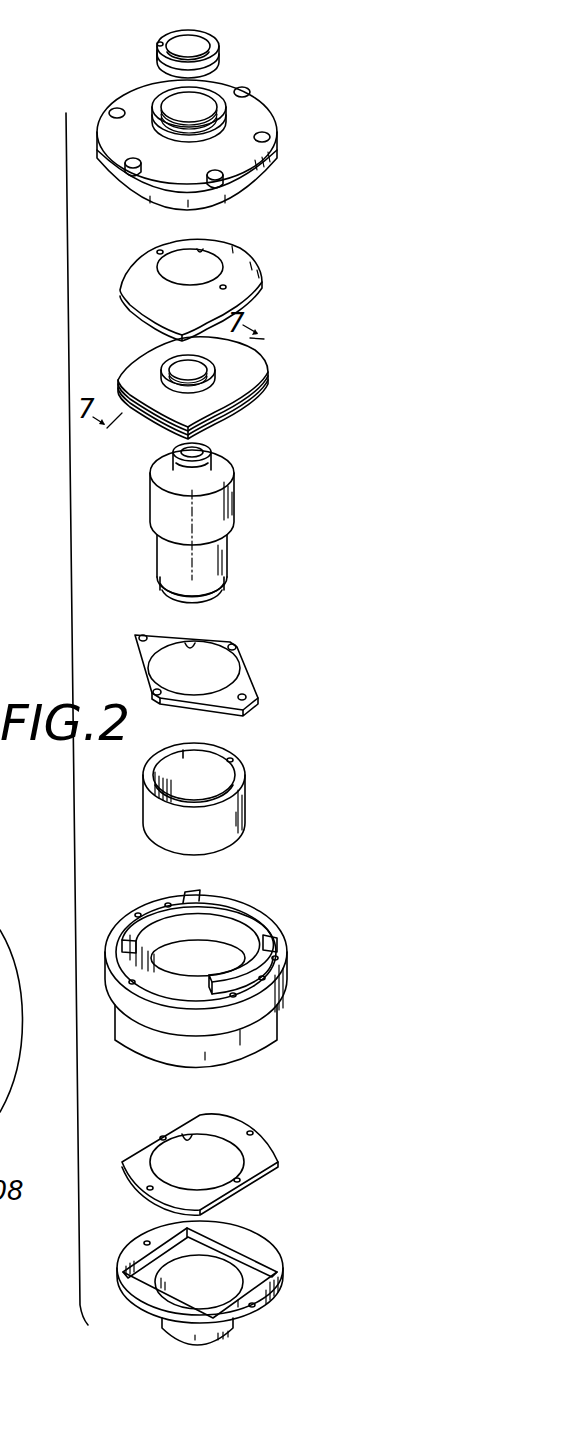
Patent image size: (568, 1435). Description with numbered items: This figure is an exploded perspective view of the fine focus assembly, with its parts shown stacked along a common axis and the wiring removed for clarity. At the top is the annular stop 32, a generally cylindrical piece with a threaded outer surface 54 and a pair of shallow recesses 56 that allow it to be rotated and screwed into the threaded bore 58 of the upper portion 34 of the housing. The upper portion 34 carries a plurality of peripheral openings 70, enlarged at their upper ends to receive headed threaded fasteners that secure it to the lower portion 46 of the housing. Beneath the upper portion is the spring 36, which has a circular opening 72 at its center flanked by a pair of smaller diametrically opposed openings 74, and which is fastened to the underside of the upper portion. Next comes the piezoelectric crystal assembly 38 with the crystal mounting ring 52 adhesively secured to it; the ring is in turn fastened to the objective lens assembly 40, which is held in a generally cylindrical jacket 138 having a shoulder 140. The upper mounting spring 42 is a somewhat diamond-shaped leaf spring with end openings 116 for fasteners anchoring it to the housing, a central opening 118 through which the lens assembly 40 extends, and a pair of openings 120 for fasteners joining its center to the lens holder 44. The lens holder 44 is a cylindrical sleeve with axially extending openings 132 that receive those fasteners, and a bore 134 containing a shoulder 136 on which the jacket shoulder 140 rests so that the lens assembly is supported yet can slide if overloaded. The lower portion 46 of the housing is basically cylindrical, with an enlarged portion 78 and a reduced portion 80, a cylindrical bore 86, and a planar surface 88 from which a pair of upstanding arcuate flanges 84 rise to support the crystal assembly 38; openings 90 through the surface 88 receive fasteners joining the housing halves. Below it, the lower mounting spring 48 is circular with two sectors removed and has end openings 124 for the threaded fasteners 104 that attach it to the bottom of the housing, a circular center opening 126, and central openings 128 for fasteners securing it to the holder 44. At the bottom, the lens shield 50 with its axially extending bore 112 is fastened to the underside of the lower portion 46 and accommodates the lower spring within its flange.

The annular stop 32 is at (215, 52).
The upper portion of the housing 34 is at (203, 142).
The spring 36 is at (218, 279).
The piezoelectric crystal assembly 38 is at (219, 386).
The objective lens assembly 40 is at (204, 523).
The upper mounting spring 42 is at (205, 653).
The lens holder 44 is at (193, 783).
The lower portion of the housing 46 is at (224, 975).
The lower mounting spring 48 is at (211, 1158).
The lens shield 50 is at (228, 1269).
The crystal mounting ring 52 is at (216, 370).
The threaded outer surface 54 is at (156, 58).
The recesses 56 is at (158, 43).
The threaded bore 58 is at (160, 100).
The openings 70 is at (263, 140).
The circular opening 72 is at (202, 250).
The smaller openings 74 is at (158, 250).
The enlarged portion 78 is at (265, 977).
The reduced portion 80 is at (240, 1040).
The arcuate flanges 84 is at (260, 917).
The cylindrical bore 86 is at (163, 922).
The planar surface 88 is at (266, 981).
The openings 90 is at (259, 982).
The threaded fasteners 104 is at (0, 946).
The axially extending bore 112 is at (203, 1263).
The openings 116 is at (140, 637).
The opening 118 is at (192, 647).
The openings 120 is at (235, 647).
The end openings 124 is at (252, 1131).
The center opening 126 is at (187, 1142).
The central openings 128 is at (161, 1137).
The axially extending openings 132 is at (233, 758).
The bore 134 is at (185, 762).
The shoulder 136 is at (153, 772).
The jacket 138 is at (233, 490).
The shoulder 140 is at (153, 530).